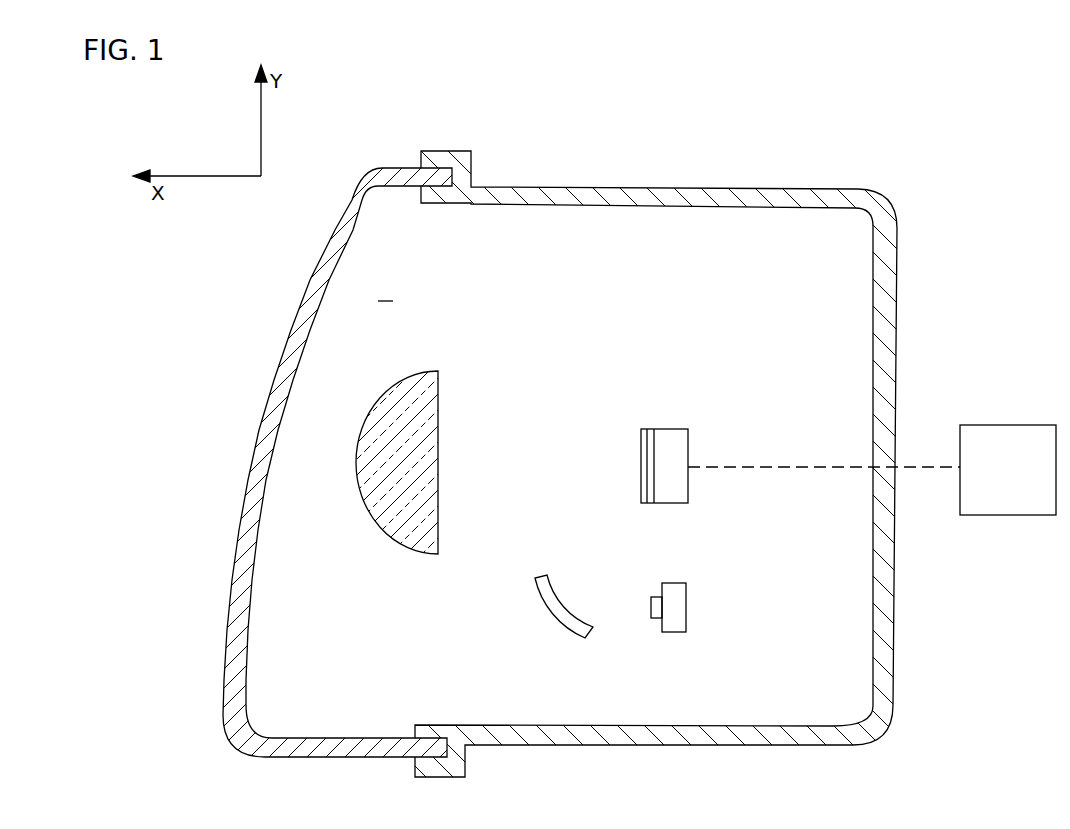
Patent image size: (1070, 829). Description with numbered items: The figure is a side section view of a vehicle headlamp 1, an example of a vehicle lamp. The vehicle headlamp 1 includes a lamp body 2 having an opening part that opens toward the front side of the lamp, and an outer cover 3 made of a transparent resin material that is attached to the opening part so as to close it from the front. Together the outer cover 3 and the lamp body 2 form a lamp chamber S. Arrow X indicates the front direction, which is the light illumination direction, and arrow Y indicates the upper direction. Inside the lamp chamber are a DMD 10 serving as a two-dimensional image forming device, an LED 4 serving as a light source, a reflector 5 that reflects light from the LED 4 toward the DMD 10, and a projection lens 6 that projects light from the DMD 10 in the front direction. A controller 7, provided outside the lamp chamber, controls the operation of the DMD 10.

The vehicle headlamp 1 is at (830, 164).
The lamp body 2 is at (889, 227).
The outer cover 3 is at (280, 378).
The LED 4 is at (680, 609).
The reflector 5 is at (555, 613).
The projection lens 6 is at (388, 528).
The controller 7 is at (1012, 430).
The DMD (Digital Mirror Device) 10 is at (680, 478).